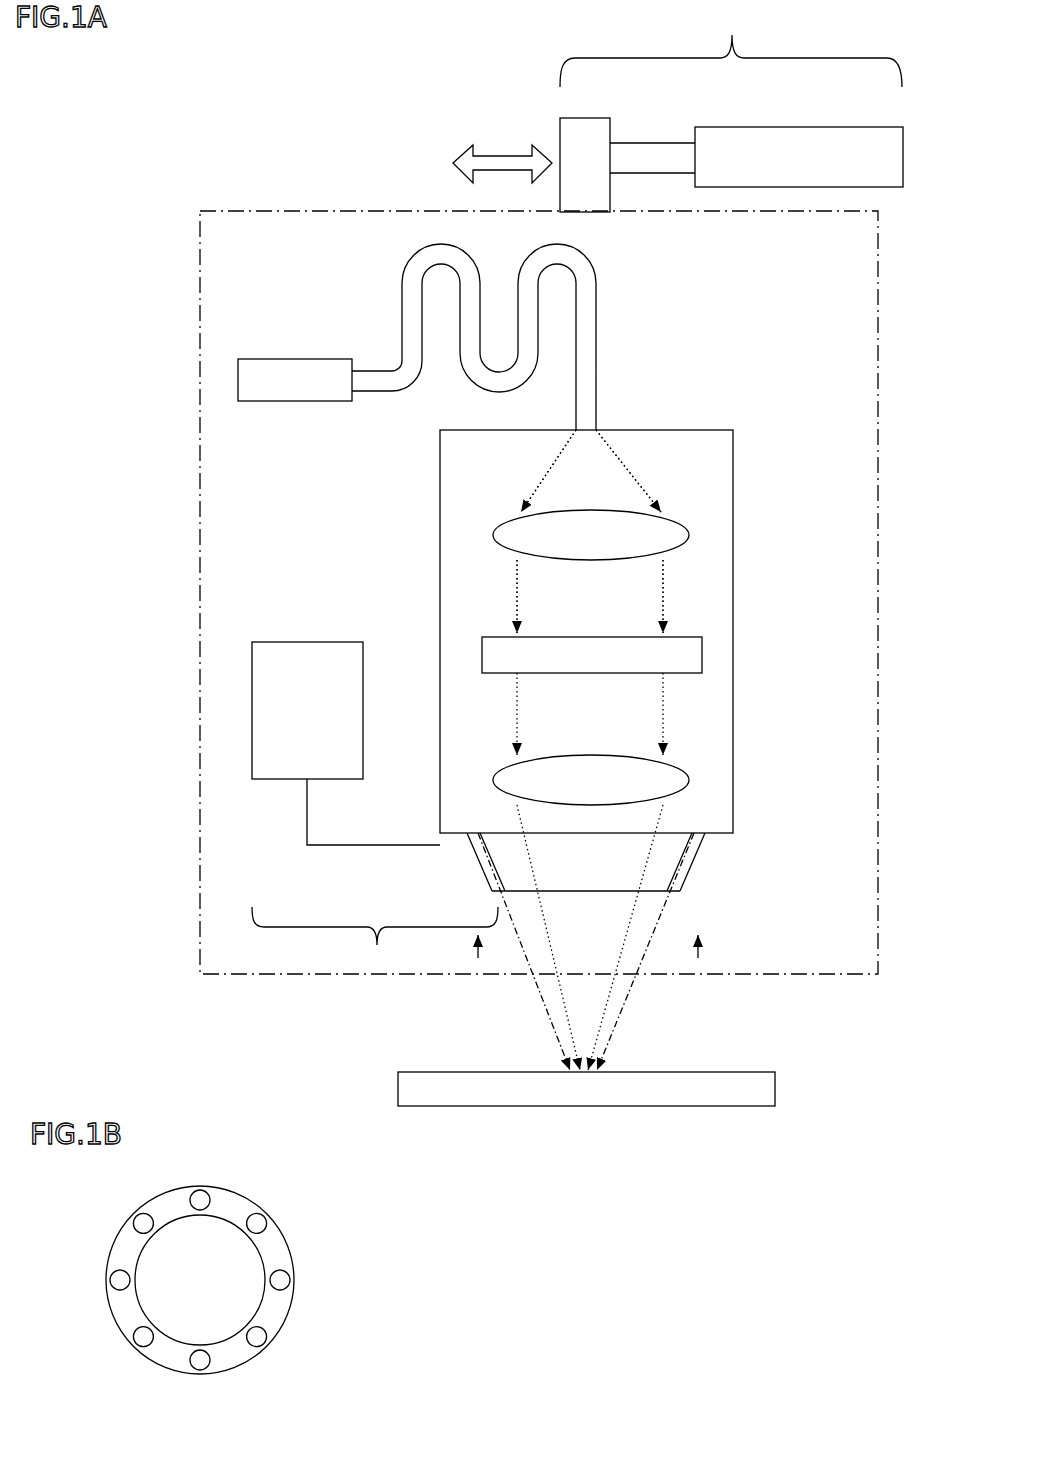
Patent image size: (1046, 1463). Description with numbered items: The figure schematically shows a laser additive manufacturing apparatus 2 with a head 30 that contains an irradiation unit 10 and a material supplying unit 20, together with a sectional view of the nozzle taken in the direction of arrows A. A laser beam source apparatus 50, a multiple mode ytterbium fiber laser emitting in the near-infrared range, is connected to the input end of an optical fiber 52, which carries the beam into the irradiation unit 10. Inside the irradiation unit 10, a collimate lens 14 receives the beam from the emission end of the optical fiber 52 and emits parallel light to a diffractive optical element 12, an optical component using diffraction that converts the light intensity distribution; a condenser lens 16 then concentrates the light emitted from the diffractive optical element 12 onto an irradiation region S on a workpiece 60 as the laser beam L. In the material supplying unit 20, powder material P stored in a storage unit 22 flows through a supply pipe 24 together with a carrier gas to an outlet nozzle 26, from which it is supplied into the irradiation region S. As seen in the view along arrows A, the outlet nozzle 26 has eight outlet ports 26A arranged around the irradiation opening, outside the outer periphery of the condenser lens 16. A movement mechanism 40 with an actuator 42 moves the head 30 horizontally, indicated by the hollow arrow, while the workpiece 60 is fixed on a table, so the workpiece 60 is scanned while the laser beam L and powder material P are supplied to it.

In FIG. 1A, the laser additive manufacturing apparatus 2 is at (820, 1123).
In FIG. 1A, the irradiation unit 10 is at (440, 498).
In FIG. 1A, the diffractive optical element 12 is at (498, 655).
In FIG. 1A, the collimate lens 14 is at (518, 537).
In FIG. 1A, the condenser lens 16 is at (512, 770).
In FIG. 1B, the condenser lens 16 is at (182, 1254).
In FIG. 1A, the material supplying unit 20 is at (375, 939).
In FIG. 1A, the storage unit 22 is at (317, 662).
In FIG. 1A, the supply pipe 24 is at (307, 818).
In FIG. 1A, the outlet nozzle 26 is at (480, 852).
In FIG. 1B, the outlet nozzle 26 is at (290, 1250).
In FIG. 1A, the outlet ports 26A is at (498, 898).
In FIG. 1B, the outlet ports 26A is at (278, 1282).
In FIG. 1A, the head 30 is at (200, 593).
In FIG. 1A, the movement mechanism 40 is at (678, 110).
In FIG. 1A, the actuator 42 is at (777, 153).
In FIG. 1A, the laser beam source apparatus 50 is at (290, 359).
In FIG. 1A, the optical fiber 52 is at (402, 305).
In FIG. 1A, the workpiece 60 is at (668, 1095).
In FIG. 1A, the irradiation region S is at (610, 1062).
In FIG. 1A, the laser beam L is at (543, 923).
In FIG. 1A, the powder material P is at (655, 927).
In FIG. 1A, the arrows A- A is at (587, 948).